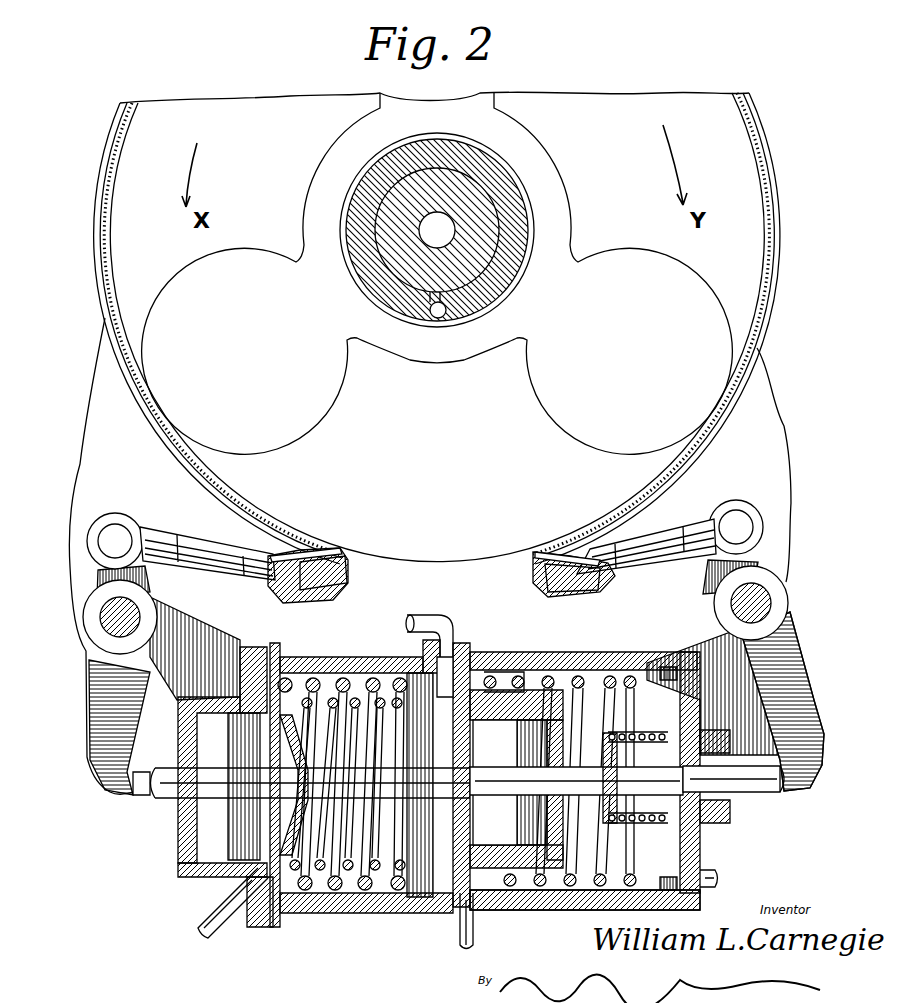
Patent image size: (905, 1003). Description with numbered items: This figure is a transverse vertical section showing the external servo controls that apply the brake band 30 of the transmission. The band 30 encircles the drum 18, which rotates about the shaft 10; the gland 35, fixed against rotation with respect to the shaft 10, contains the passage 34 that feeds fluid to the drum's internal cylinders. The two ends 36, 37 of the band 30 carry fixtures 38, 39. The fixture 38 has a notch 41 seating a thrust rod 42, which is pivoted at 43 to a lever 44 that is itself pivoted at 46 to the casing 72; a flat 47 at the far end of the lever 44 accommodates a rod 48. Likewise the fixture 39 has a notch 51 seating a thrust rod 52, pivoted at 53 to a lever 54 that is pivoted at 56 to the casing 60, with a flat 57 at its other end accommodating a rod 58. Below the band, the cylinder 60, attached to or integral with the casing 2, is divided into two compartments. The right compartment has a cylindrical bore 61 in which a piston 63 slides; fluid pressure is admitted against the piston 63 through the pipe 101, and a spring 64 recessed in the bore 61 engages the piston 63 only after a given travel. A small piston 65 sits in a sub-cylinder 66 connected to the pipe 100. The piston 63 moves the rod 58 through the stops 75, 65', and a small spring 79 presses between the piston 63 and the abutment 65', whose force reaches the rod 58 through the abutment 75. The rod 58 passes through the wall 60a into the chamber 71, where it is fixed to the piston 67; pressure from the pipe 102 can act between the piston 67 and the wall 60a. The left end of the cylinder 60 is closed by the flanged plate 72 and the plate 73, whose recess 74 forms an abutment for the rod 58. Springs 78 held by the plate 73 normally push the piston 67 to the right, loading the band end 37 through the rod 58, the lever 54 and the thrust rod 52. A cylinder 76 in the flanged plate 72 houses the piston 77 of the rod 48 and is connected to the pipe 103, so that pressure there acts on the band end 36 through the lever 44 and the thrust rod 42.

The casing 2 is at (82, 560).
The shaft 10 is at (485, 236).
The drum 18 is at (745, 133).
The brake band 30 is at (756, 110).
The passage 34 is at (445, 316).
The gland 35 is at (447, 150).
The band end 36 is at (300, 548).
The band end 37 is at (550, 550).
The fixture 38 is at (320, 572).
The fixture 39 is at (560, 562).
The notch 41 is at (294, 600).
The thrust rod 42 is at (196, 544).
The pivot 43 is at (115, 535).
The lever 44 is at (135, 572).
The pivot 46 is at (110, 628).
The flat 47 is at (140, 773).
The rod 48 is at (173, 790).
The notch 51 is at (570, 590).
The thrust rod 52 is at (655, 540).
The pivot 53 is at (735, 520).
The lever 54 is at (768, 547).
The pivot 56 is at (765, 598).
The flat 57 is at (784, 785).
The rod 58 is at (755, 788).
The cylinder 60 is at (545, 657).
The wall 60a is at (457, 645).
The cylindrical bore 61 is at (573, 672).
The piston 63 is at (680, 715).
The spring 64 is at (518, 676).
The small piston 65 is at (516, 779).
The abutment 65' is at (576, 776).
The sub-cylinder 66 is at (503, 812).
The piston 67 is at (424, 883).
The chamber 71 is at (332, 683).
The flanged plate 72 is at (262, 912).
The plate 73 is at (277, 645).
The recess 74 is at (297, 778).
The stop 75 is at (690, 795).
The cylinder 76 is at (216, 862).
The piston 77 is at (240, 748).
The springs 78 is at (350, 890).
The small spring 79 is at (625, 805).
The pipe 100 is at (460, 937).
The pipe 101 is at (715, 868).
The pipe 102 is at (425, 608).
The pipe 103 is at (221, 913).